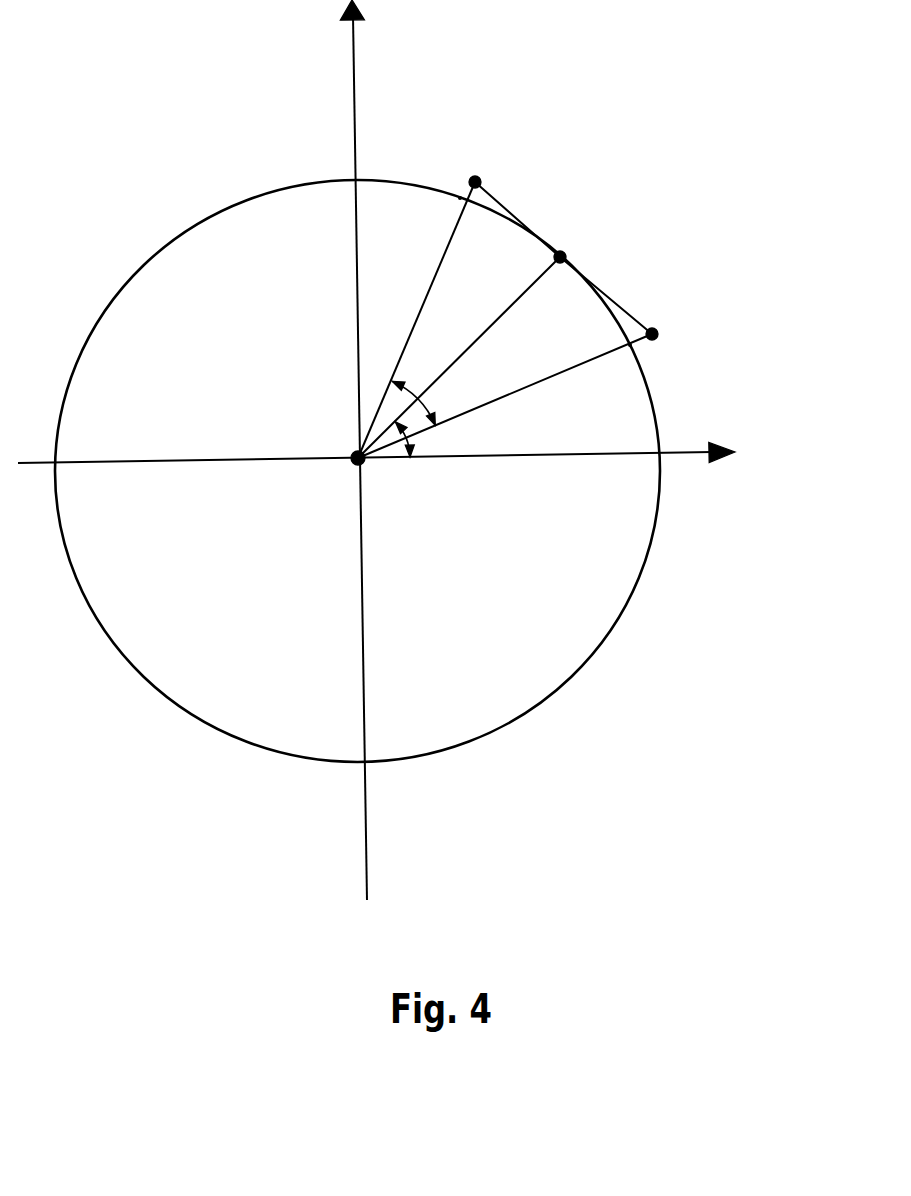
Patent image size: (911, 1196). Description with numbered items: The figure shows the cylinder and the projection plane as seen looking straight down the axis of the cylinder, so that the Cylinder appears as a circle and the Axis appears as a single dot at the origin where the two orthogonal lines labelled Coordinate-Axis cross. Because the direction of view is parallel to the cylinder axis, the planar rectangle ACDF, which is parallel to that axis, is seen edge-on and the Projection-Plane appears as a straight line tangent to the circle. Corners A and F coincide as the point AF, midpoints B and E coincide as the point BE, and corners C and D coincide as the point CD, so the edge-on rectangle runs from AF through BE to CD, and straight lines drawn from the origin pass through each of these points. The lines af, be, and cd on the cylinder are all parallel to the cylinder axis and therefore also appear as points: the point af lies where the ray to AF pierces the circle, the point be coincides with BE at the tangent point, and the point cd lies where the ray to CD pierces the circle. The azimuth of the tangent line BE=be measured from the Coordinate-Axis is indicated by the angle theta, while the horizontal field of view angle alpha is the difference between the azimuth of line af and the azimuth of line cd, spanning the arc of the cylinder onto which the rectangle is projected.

The coordinate axis Coordinate-Axis is at (436, 450).
The cylinder Cylinder is at (530, 727).
The axis of the cylinder Axis is at (349, 472).
The edge AF is at (430, 297).
The line BE is at (481, 339).
The edge CD is at (536, 393).
The projection plane Projection-Plane is at (512, 199).
The line af is at (452, 205).
The line be is at (538, 255).
The line cd is at (626, 361).
The horizontal field of view angle alpha is at (420, 403).
The azimuth angle theta is at (414, 438).